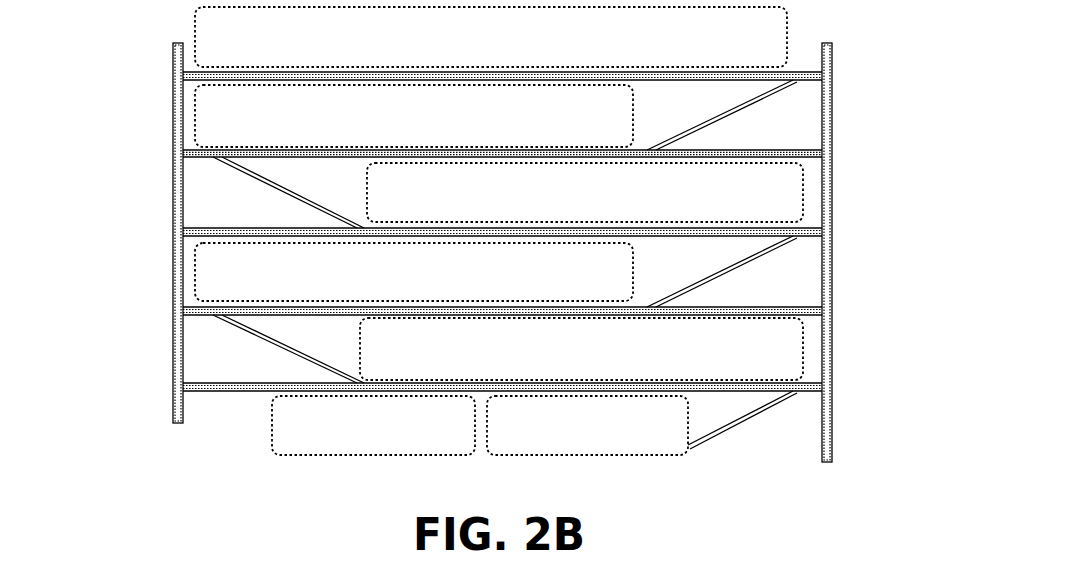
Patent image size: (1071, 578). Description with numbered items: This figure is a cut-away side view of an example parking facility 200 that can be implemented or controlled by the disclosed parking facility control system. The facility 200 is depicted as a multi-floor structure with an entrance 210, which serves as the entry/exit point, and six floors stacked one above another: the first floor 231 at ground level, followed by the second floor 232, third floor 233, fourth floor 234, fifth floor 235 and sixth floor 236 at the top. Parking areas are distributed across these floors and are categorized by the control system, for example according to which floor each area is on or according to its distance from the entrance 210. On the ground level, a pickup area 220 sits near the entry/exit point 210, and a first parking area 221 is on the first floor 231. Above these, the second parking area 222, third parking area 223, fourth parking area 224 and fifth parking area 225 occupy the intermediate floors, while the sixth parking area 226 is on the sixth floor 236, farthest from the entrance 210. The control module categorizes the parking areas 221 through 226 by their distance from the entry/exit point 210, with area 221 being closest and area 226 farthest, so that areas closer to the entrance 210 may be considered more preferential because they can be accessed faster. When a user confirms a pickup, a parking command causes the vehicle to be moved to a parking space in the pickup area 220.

The parking facility 200 is at (157, 112).
The entrance 210 is at (170, 433).
The pickup area 220 is at (348, 434).
The first parking area 221 is at (571, 434).
The second parking area 222 is at (566, 356).
The third parking area 223 is at (406, 282).
The fourth parking area 224 is at (571, 202).
The fifth parking area 225 is at (408, 126).
The sixth parking area 226 is at (494, 47).
The first floor 231 is at (832, 415).
The second floor 232 is at (832, 337).
The third floor 233 is at (832, 255).
The fourth floor 234 is at (832, 185).
The fifth floor 235 is at (832, 113).
The sixth floor 236 is at (832, 45).